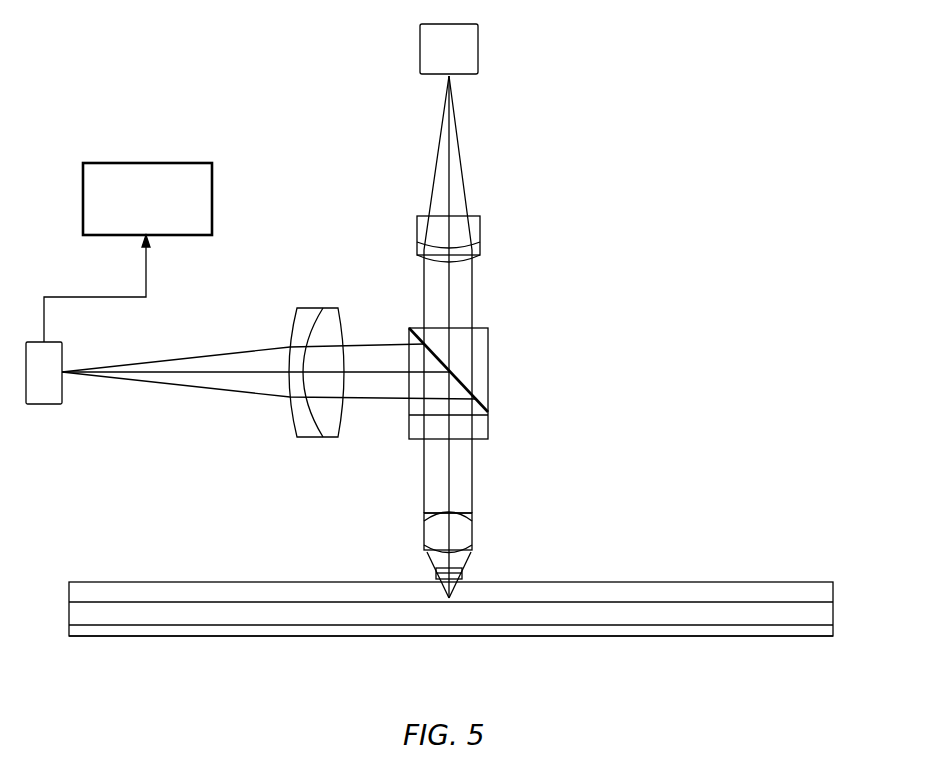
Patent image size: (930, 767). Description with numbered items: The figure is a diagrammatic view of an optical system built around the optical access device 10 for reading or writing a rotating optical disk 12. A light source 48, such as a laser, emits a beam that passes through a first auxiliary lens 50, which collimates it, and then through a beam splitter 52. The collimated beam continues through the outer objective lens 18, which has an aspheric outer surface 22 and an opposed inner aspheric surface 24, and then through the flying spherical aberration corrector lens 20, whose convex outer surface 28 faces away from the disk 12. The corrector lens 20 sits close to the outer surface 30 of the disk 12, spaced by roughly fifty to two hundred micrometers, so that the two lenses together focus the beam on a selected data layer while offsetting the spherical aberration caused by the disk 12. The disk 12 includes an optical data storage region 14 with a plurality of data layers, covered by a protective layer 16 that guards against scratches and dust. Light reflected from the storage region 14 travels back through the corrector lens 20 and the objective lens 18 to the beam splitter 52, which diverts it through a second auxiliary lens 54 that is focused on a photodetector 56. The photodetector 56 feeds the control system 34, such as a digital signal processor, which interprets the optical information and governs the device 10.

The optical access device 10 is at (450, 542).
The optical disk 12 is at (578, 632).
The optical data storage region 14 is at (627, 617).
The protective layer 16 is at (627, 590).
The objective lens 18 is at (428, 522).
The flying spherical aberration corrector lens 20 is at (437, 576).
The aspheric outer surface 22 is at (474, 515).
The inner aspheric surface 24 is at (468, 558).
The convex outer surface 28 is at (430, 558).
The outer surface of the disk 30 is at (715, 580).
The control system 34 is at (150, 163).
The light source 48 is at (479, 48).
The first auxiliary lens 50 is at (481, 226).
The beam splitter 52 is at (489, 362).
The second auxiliary lens 54 is at (315, 308).
The photodetector 56 is at (44, 404).